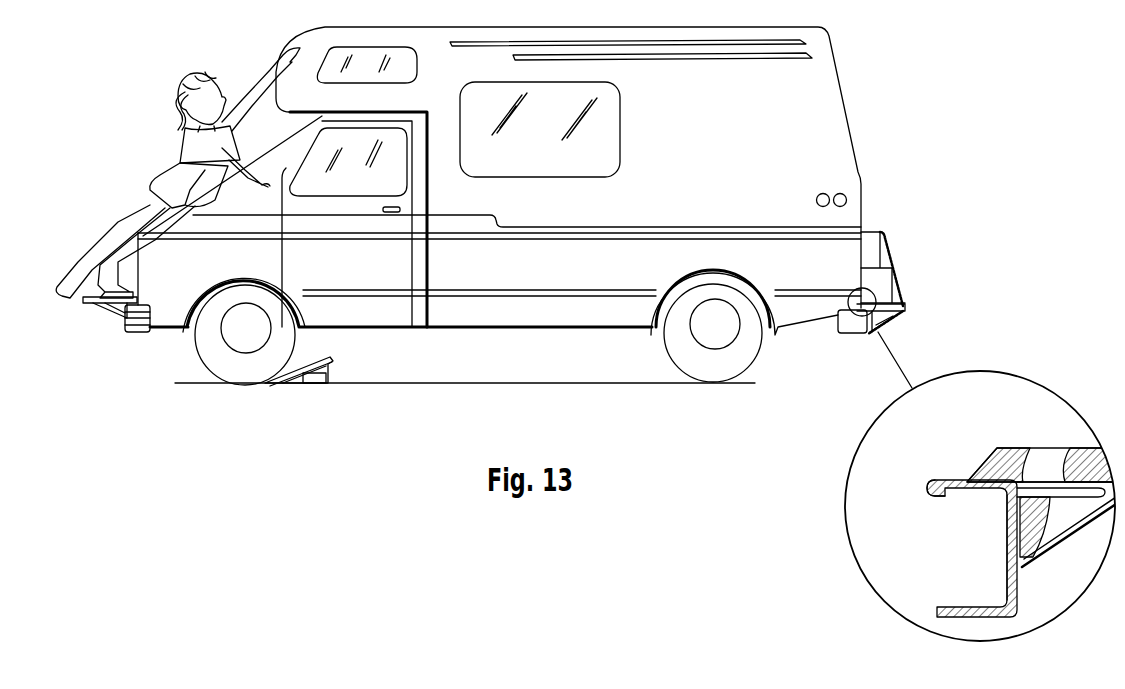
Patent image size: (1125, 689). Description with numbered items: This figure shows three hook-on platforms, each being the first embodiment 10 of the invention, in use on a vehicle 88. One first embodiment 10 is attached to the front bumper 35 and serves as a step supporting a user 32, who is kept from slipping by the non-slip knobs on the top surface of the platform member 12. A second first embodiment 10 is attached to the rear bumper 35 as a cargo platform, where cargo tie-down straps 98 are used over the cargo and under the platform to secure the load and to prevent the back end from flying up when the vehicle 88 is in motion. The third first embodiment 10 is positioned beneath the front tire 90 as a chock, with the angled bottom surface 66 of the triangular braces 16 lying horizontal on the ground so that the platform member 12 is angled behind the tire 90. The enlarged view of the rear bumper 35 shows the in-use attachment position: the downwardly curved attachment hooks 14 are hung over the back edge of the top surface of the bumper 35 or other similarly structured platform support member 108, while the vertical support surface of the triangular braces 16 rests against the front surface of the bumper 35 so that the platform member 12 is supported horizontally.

The first embodiment 10 is at (108, 320).
The platform member 12 is at (298, 364).
The attachment hooks 14 is at (930, 478).
The triangular braces 16 is at (292, 384).
The user 32 is at (193, 140).
The bumper 35 is at (143, 334).
The angled bottom surface 66 is at (310, 387).
The vehicle 88 is at (832, 119).
The tire 90 is at (287, 342).
The cargo tie-down straps 98 is at (888, 251).
The platform support member 108 is at (1005, 523).